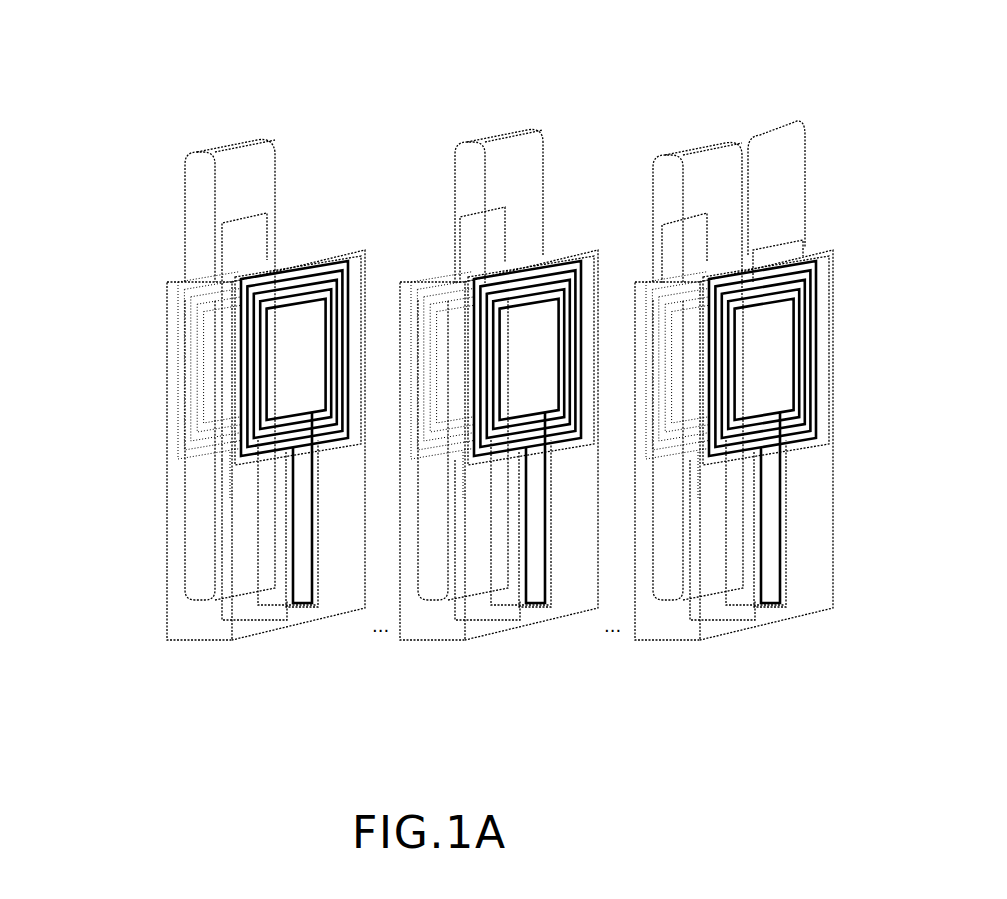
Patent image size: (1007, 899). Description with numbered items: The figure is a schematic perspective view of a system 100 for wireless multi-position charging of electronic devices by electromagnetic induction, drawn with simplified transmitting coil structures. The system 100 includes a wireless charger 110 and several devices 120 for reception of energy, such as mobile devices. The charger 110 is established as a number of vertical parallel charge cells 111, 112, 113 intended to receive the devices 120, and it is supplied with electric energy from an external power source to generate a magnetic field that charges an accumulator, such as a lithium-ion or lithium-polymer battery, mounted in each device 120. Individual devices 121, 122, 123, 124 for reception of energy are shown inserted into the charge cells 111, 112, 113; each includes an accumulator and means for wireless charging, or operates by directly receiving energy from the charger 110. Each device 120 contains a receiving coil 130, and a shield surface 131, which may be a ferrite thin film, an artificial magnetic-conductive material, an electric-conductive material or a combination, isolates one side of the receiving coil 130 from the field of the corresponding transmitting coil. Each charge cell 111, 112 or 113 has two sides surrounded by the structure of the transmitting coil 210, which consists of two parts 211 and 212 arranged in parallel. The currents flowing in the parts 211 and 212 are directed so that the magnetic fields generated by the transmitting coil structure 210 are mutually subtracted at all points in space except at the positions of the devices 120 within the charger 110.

The system 100 is at (718, 56).
The wireless charger 110 is at (808, 691).
The charge cell 111 is at (205, 416).
The charge cell 112 is at (491, 412).
The charge cell 113 is at (710, 399).
The device for reception of energy 120 is at (825, 106).
The device for reception of energy 121 is at (195, 162).
The device for reception of energy 122 is at (467, 158).
The device for reception of energy 123 is at (668, 160).
The device for reception of energy 124 is at (752, 132).
The receiving coil 130 is at (262, 233).
The shield surface 131 is at (470, 222).
The structure of the transmitting coil 210 is at (196, 433).
The part of the structure of the transmitting coil 211 is at (188, 400).
The part of the structure of the transmitting coil 212 is at (240, 352).